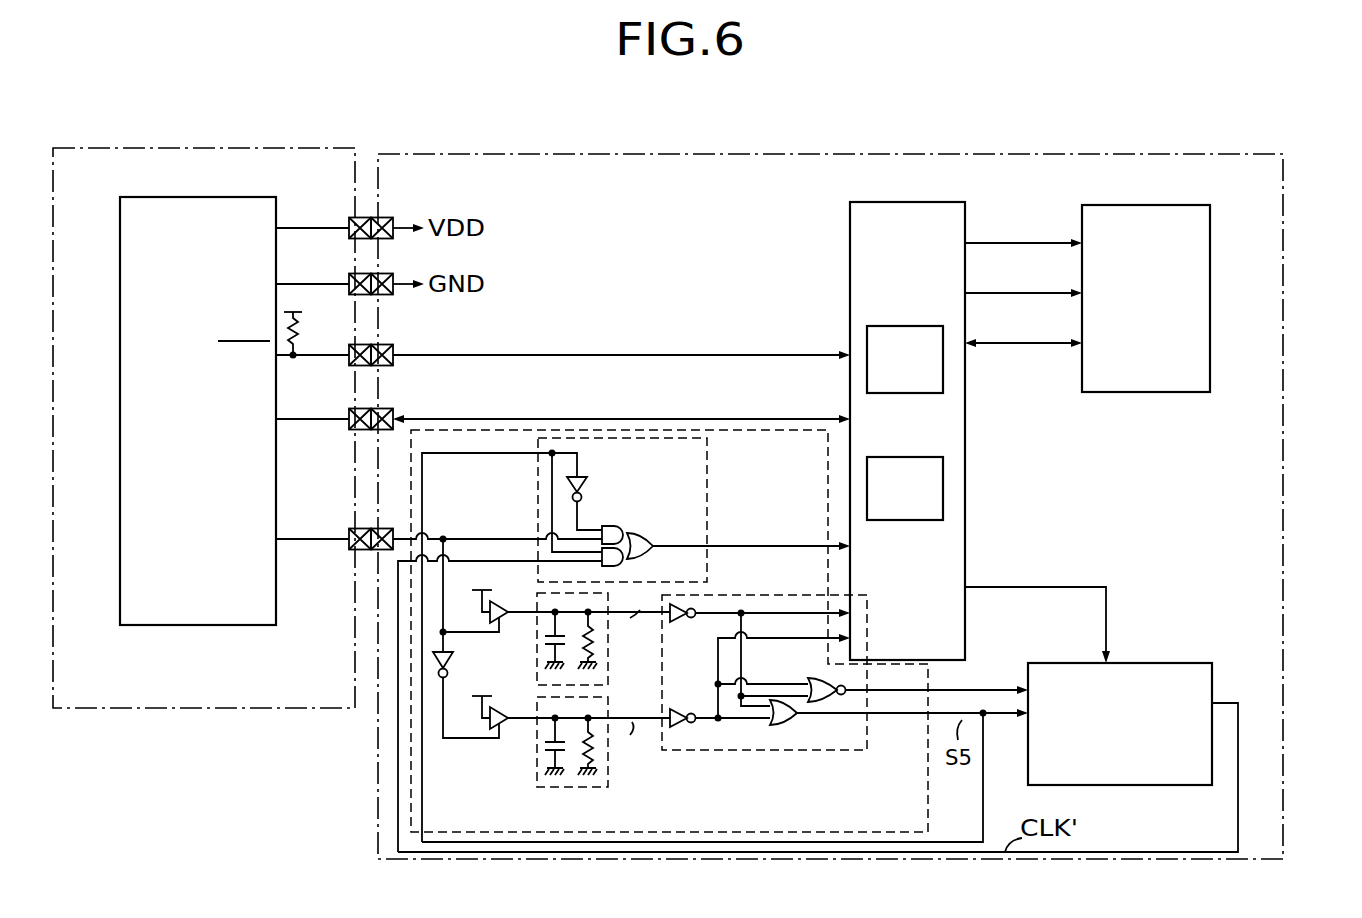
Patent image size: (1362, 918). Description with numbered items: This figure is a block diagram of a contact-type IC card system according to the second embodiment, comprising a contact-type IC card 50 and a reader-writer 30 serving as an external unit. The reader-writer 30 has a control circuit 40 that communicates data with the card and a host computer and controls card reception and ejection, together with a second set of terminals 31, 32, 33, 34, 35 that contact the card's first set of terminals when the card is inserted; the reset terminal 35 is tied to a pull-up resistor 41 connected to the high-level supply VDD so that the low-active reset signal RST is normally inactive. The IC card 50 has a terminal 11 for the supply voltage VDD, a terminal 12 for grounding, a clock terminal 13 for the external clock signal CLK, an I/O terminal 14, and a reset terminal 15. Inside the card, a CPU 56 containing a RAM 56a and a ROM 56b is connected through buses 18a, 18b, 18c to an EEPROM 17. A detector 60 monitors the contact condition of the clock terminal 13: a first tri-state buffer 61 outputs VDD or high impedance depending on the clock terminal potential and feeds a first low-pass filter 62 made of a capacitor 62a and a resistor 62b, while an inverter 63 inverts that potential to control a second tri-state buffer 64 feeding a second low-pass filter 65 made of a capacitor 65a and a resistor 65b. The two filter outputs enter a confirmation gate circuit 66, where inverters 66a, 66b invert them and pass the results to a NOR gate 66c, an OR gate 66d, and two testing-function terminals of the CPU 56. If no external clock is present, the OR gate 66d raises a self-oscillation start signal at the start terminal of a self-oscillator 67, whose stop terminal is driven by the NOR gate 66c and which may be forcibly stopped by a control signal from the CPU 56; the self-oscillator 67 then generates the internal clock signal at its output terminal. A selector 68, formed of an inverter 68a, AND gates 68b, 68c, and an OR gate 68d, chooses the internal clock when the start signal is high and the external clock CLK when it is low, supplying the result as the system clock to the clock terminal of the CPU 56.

The reader-writer 30 is at (175, 708).
The contact-type IC card 50 is at (1290, 245).
The control circuit 40 is at (120, 250).
The pull-up resistor 41 is at (300, 334).
The terminal 31 is at (350, 216).
The terminal 32 is at (350, 272).
The terminal 33 is at (350, 528).
The terminal 34 is at (350, 430).
The reset terminal 35 is at (350, 366).
The terminal 11 is at (392, 216).
The terminal 12 is at (392, 272).
The clock terminal 13 is at (386, 528).
The I/O terminal 14 is at (392, 407).
The reset terminal 15 is at (392, 343).
The CPU 56 is at (908, 202).
The RAM 56a is at (906, 326).
The ROM 56b is at (906, 457).
The EEPROM 17 is at (1144, 205).
The bus 18a is at (1017, 242).
The bus 18b is at (1017, 292).
The bus 18c is at (1017, 342).
The detector 60 is at (408, 728).
The first tri-state buffer 61 is at (510, 600).
The first low-pass filter 62 is at (608, 670).
The capacitor 62a is at (545, 640).
The resistor 62b is at (600, 643).
The inverter 63 is at (440, 680).
The second tri-state buffer 64 is at (500, 732).
The second low-pass filter 65 is at (537, 787).
The capacitor 65a is at (567, 745).
The resistor 65b is at (598, 748).
The confirmation gate circuit 66 is at (770, 752).
The inverter 66a is at (685, 620).
The inverter 66b is at (680, 710).
The NOR gate 66c is at (812, 680).
The OR gate 66d is at (794, 720).
The self-oscillator 67 is at (1150, 663).
The selector 68 is at (707, 478).
The inverter 68a is at (585, 476).
The AND gate 68b is at (614, 525).
The AND gate 68c is at (625, 562).
The OR gate 68d is at (650, 542).